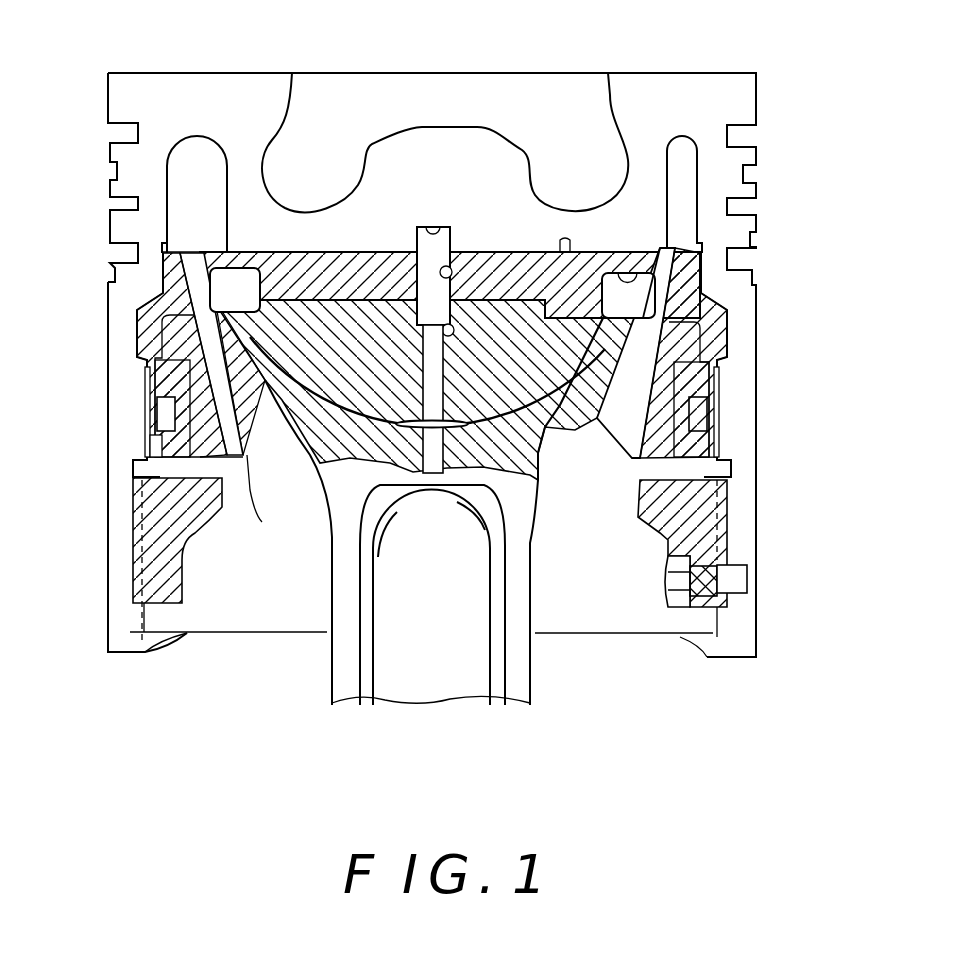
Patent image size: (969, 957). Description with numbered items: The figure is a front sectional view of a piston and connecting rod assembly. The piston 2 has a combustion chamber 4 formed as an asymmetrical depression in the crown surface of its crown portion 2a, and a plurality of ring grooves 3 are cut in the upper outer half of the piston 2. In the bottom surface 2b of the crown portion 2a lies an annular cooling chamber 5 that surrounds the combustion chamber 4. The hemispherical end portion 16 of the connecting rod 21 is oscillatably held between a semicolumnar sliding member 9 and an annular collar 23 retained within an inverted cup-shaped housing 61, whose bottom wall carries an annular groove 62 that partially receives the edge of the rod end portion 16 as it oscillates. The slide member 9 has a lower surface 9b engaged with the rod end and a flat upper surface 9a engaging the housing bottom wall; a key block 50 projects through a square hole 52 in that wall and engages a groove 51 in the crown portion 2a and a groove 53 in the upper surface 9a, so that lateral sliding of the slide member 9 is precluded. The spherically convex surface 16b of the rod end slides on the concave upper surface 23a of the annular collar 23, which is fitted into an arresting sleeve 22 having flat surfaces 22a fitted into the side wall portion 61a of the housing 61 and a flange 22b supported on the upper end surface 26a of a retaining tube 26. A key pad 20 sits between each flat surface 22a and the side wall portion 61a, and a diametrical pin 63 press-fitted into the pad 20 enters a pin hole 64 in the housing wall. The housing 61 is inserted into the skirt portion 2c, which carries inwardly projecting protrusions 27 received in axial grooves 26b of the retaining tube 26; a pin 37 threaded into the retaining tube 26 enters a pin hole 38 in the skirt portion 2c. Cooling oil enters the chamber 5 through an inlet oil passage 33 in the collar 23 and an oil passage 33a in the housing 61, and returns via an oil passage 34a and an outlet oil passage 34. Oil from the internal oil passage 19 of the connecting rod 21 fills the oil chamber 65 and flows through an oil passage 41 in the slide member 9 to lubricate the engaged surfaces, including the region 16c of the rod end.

The piston 2 is at (222, 70).
The crown portion 2a is at (376, 240).
The bottom surface of the crown portion 2b is at (262, 258).
The skirt portion 2c is at (758, 486).
The ring grooves 3 is at (134, 127).
The combustion chamber 4 is at (272, 142).
The annular cooling chamber 5 is at (200, 199).
The semicolumnar sliding member 9 is at (390, 380).
The flat upper surface of the slide member 9a is at (388, 300).
The lower surface of the slide member 9b is at (338, 408).
The rod end portion 16 is at (605, 343).
The annular convex surface of the rod end portion 16b is at (285, 443).
The insert inner wall 16c is at (505, 400).
The internal oil passage 19 is at (440, 452).
The pad member 20 is at (137, 462).
The connecting rod 21 is at (440, 700).
The arresting sleeve 22 is at (185, 373).
The outer peripheral flat surfaces 22a is at (695, 385).
The flange 22b is at (615, 470).
The annular collar 23 is at (180, 338).
The upper surface of the annular collar 23a is at (275, 350).
The retaining tube 26 is at (175, 570).
The upper end surface of the retaining tube 26a is at (260, 529).
The axial grooves 26b is at (132, 548).
The protrusions 27 is at (182, 634).
The inlet oil passage 33 is at (640, 458).
The oil passage in the housing 33a is at (752, 277).
The outlet oil passage 34 is at (236, 458).
The oil passage in the housing 34a is at (187, 273).
The pin 37 is at (665, 580).
The pin hole 38 is at (750, 579).
The oil passage in the slide member 41 is at (436, 362).
The key block 50 is at (452, 240).
The groove in the crown portion 51 is at (430, 233).
The square hole 52 is at (462, 281).
The groove in the slide member 53 is at (455, 325).
The inverted cup-shaped housing 61 is at (565, 252).
The side wall portion of the housing 61a is at (710, 452).
The annular groove 62 is at (641, 250).
The diametrical pin 63 is at (163, 413).
The pin hole 64 is at (148, 437).
The oil chamber 65 is at (252, 309).